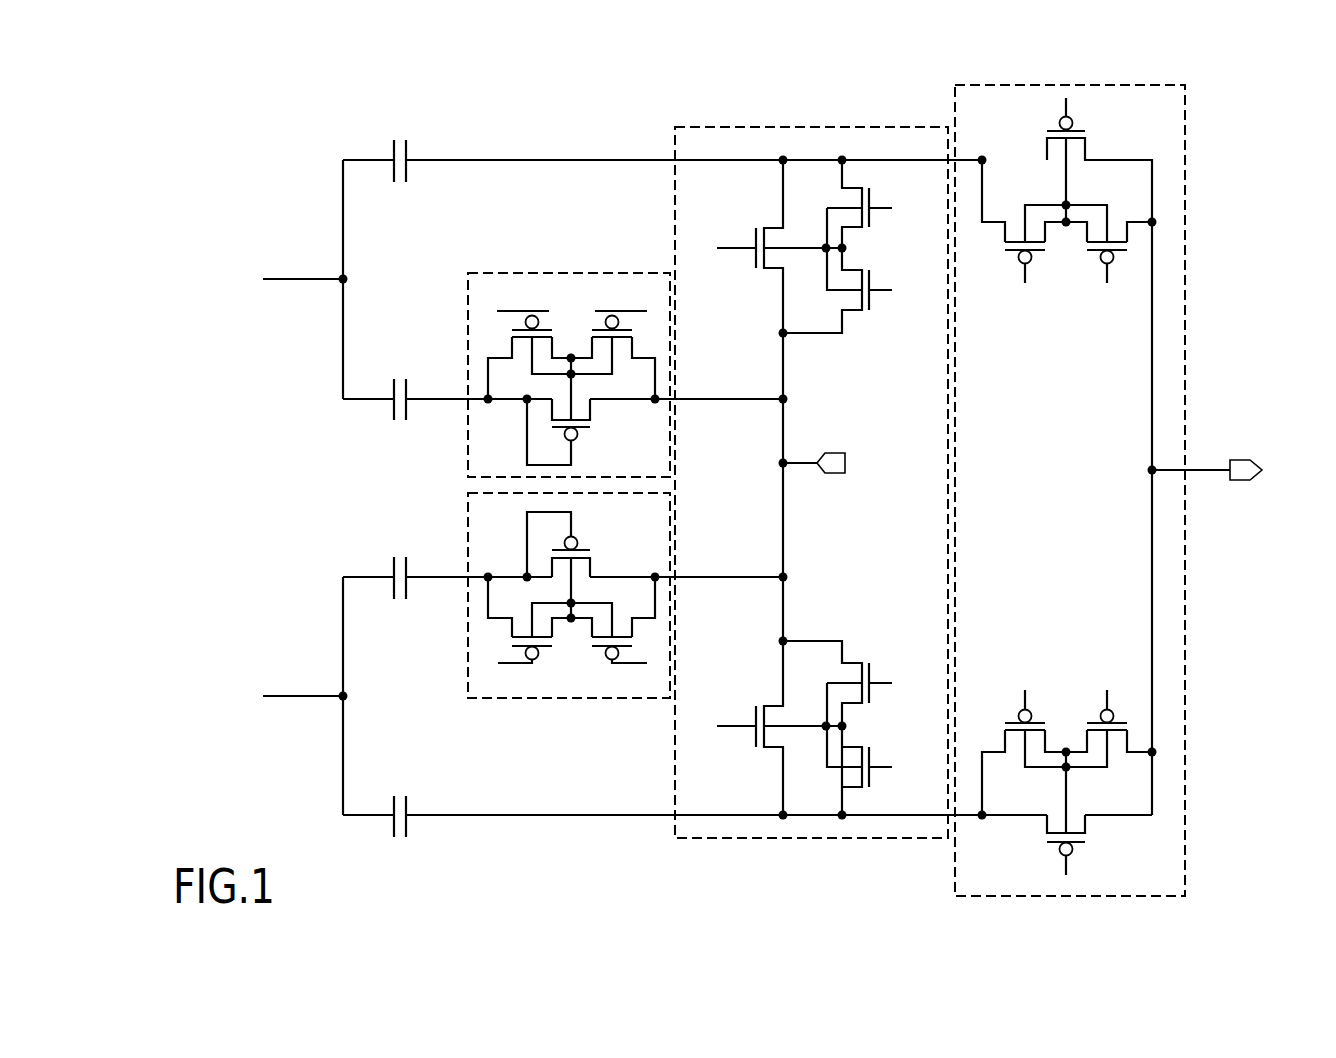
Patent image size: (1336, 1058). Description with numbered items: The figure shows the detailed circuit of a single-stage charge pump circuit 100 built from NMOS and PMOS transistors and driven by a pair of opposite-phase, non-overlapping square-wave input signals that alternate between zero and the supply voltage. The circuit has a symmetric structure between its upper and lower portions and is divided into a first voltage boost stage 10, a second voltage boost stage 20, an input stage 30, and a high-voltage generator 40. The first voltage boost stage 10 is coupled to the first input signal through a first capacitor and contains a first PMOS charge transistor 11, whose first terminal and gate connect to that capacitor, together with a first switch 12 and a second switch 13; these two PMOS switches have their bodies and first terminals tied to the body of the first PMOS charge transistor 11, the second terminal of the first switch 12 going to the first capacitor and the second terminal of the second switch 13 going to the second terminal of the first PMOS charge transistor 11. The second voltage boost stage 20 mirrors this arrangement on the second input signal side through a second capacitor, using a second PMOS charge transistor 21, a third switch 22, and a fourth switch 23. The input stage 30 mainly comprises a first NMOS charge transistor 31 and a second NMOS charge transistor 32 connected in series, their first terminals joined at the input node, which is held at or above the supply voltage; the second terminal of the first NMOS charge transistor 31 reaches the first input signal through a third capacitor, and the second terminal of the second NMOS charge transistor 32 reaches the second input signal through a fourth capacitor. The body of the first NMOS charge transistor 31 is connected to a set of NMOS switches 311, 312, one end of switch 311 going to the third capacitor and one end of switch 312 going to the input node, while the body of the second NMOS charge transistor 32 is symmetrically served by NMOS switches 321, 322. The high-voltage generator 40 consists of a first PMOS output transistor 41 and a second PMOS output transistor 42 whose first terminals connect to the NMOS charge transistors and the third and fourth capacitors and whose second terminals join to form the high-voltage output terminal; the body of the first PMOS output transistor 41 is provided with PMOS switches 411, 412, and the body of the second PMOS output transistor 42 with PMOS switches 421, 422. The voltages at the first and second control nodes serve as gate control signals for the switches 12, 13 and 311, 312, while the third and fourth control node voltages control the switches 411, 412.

The charge pump circuit 100 is at (289, 159).
The first voltage boost stage 10 is at (565, 272).
The first PMOS charge transistor 11 is at (592, 412).
The first switch 12 is at (522, 325).
The second switch 13 is at (623, 325).
The second voltage boost stage 20 is at (565, 698).
The second PMOS charge transistor 21 is at (588, 543).
The third switch 22 is at (508, 632).
The fourth switch 23 is at (630, 632).
The input stage 30 is at (805, 125).
The first NMOS charge transistor 31 is at (753, 262).
The NMOS switch 311 is at (867, 227).
The NMOS switch 312 is at (867, 310).
The second NMOS charge transistor 32 is at (755, 745).
The NMOS switch 321 is at (872, 787).
The NMOS switch 322 is at (867, 658).
The high-voltage generator 40 is at (1185, 98).
The first PMOS output transistor 41 is at (1090, 138).
The PMOS switch 411 is at (1002, 250).
The PMOS switch 412 is at (1123, 252).
The second PMOS output transistor 42 is at (1088, 832).
The PMOS switch 421 is at (1003, 718).
The PMOS switch 422 is at (1127, 720).